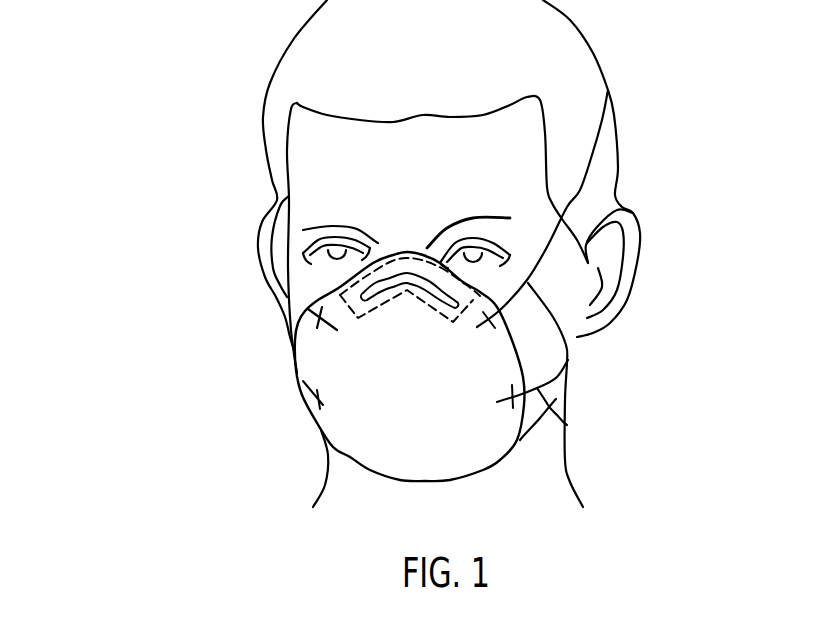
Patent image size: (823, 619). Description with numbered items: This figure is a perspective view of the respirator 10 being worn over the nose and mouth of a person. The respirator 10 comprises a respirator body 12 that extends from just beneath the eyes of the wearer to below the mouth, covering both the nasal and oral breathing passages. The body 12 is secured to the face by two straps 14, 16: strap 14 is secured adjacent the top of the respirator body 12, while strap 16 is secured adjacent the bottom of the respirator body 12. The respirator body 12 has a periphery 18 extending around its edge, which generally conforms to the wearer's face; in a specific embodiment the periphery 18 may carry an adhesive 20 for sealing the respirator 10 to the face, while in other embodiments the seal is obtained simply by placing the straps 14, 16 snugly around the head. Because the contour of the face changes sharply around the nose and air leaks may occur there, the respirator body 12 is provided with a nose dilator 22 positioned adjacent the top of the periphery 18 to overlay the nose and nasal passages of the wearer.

The respirator 10 is at (382, 285).
The respirator body 12 is at (357, 428).
The strap 14 is at (568, 362).
The strap 16 is at (567, 425).
The periphery 18 is at (298, 330).
The adhesive 20 is at (358, 293).
The nose dilator 22 is at (362, 300).